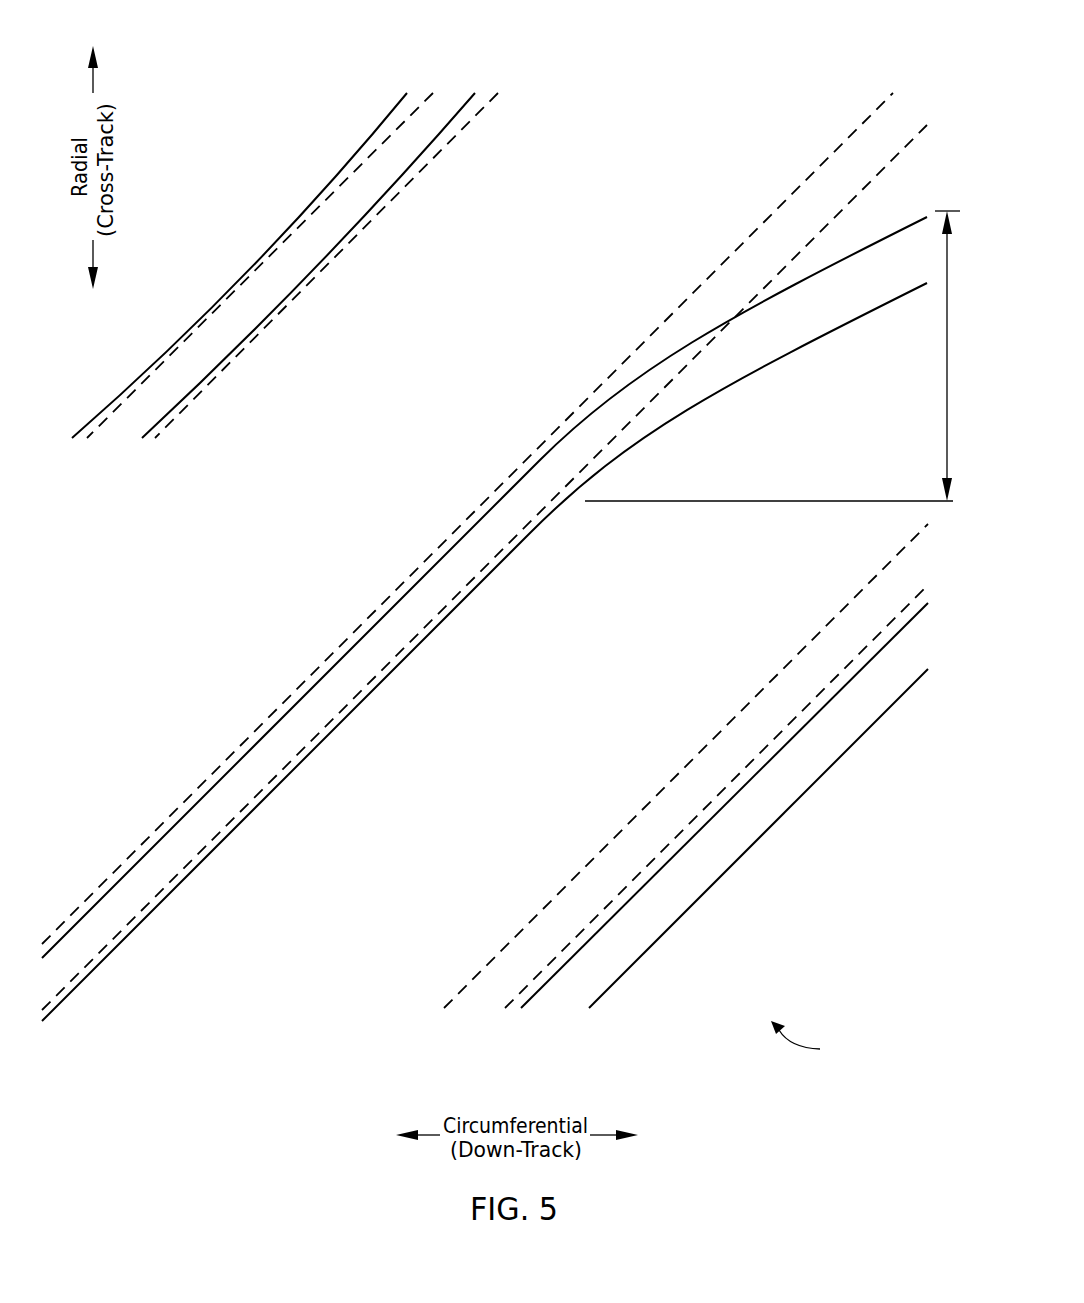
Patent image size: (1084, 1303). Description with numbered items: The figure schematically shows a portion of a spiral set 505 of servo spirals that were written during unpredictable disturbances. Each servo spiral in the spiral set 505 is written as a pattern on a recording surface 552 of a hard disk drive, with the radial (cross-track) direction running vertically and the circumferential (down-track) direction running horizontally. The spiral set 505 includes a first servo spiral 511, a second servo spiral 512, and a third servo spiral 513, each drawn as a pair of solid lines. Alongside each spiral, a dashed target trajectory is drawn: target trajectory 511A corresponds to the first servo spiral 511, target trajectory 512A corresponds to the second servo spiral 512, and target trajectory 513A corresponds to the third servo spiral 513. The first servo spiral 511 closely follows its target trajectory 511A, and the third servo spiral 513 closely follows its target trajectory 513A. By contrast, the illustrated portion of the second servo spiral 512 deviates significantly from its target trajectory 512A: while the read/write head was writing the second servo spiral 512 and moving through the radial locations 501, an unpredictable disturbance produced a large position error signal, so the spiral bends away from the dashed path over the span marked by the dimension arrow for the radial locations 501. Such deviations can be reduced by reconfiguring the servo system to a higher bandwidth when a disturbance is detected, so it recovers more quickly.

The radial locations 501 is at (945, 355).
The spiral set 505 is at (818, 1041).
The first servo spiral 511 is at (398, 101).
The target trajectory 511A is at (420, 172).
The second servo spiral 512 is at (652, 440).
The target trajectory 512A is at (762, 225).
The third servo spiral 513 is at (680, 915).
The target trajectory 513A is at (500, 948).
The recording surface 552 is at (428, 395).